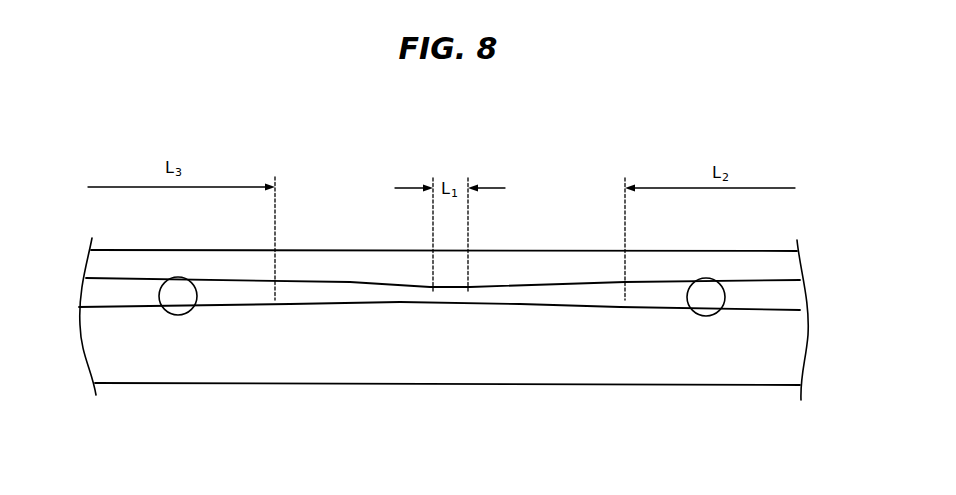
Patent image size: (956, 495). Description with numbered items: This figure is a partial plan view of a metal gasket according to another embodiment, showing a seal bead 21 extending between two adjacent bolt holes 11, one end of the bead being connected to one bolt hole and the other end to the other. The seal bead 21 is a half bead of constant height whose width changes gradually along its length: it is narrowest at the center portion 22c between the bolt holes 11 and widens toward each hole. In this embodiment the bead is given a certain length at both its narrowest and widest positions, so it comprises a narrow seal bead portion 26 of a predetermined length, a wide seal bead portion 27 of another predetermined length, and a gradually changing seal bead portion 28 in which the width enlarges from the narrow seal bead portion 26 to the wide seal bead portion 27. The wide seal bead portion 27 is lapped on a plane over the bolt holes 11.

The bolt hole 11 is at (178, 300).
The seal bead 21 is at (353, 282).
The center portion 22c is at (447, 287).
The narrow seal bead portion 26 is at (453, 300).
The wide seal bead portion 27 is at (232, 297).
The gradually changing seal bead portion 28 is at (335, 297).